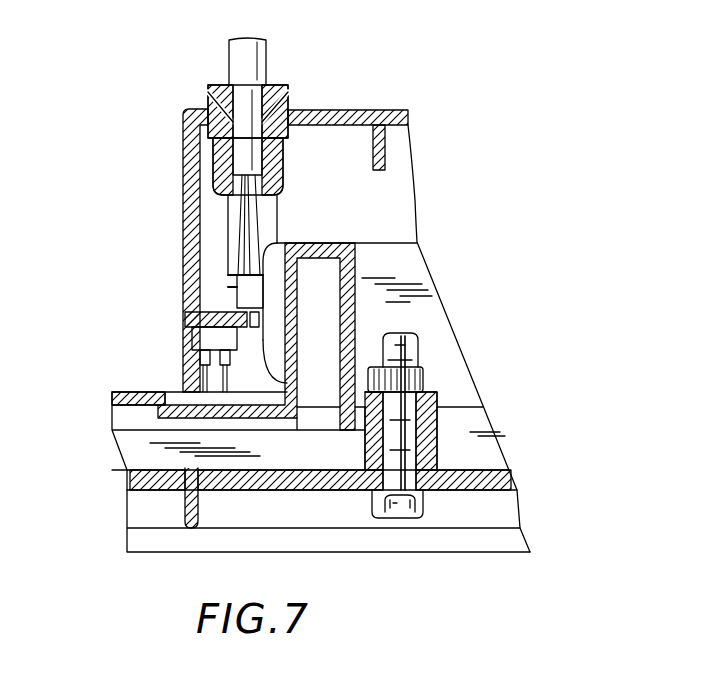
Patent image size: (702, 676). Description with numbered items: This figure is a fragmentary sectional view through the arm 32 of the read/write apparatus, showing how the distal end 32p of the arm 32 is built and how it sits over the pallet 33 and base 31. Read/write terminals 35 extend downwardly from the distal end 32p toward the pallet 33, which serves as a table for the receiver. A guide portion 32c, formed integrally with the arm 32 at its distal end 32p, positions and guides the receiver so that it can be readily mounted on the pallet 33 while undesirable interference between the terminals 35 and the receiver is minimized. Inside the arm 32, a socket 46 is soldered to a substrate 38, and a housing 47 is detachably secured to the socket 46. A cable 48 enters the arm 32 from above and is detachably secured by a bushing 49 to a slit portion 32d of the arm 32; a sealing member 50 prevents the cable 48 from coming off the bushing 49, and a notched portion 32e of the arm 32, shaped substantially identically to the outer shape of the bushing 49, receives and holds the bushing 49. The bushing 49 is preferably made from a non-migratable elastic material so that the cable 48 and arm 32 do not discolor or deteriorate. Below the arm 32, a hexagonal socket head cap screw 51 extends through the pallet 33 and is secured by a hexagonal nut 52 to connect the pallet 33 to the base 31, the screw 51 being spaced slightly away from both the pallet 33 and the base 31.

The base 31 is at (505, 483).
The arm 32 is at (408, 118).
The guide portion 32c is at (178, 348).
The slit portion 32d is at (390, 88).
The notched portion 32e is at (412, 124).
The distal end 32p is at (179, 150).
The pallet 33 is at (447, 427).
The read/write terminals 35 is at (192, 381).
The substrate 38 is at (188, 318).
The socket 46 is at (247, 297).
The housing 47 is at (237, 275).
The cable 48 is at (242, 62).
The bushing 49 is at (277, 87).
The sealing member 50 is at (283, 179).
The hexagonal socket head cap screw 51 is at (427, 508).
The hexagonal nut 52 is at (420, 378).